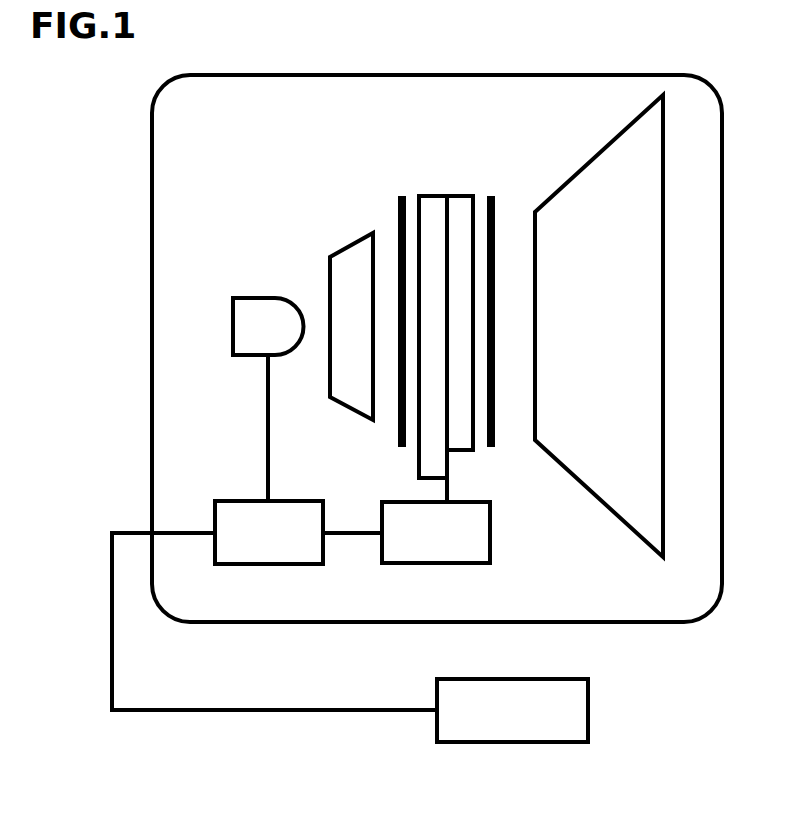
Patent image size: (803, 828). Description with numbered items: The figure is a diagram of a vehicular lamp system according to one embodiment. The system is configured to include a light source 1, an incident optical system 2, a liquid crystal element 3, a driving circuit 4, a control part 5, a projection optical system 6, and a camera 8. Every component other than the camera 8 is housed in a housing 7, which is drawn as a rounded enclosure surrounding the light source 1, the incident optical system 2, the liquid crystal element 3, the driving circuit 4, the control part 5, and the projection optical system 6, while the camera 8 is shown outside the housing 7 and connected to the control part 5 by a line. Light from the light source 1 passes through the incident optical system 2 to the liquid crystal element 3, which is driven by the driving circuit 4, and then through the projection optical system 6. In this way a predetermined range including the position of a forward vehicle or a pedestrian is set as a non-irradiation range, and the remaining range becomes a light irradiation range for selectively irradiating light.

The light source 1 is at (253, 296).
The incident optical system 2 is at (357, 245).
The liquid crystal element 3 is at (498, 187).
The driving circuit 4 is at (490, 535).
The control part 5 is at (238, 500).
The projection optical system 6 is at (557, 187).
The housing 7 is at (152, 174).
The camera 8 is at (588, 711).